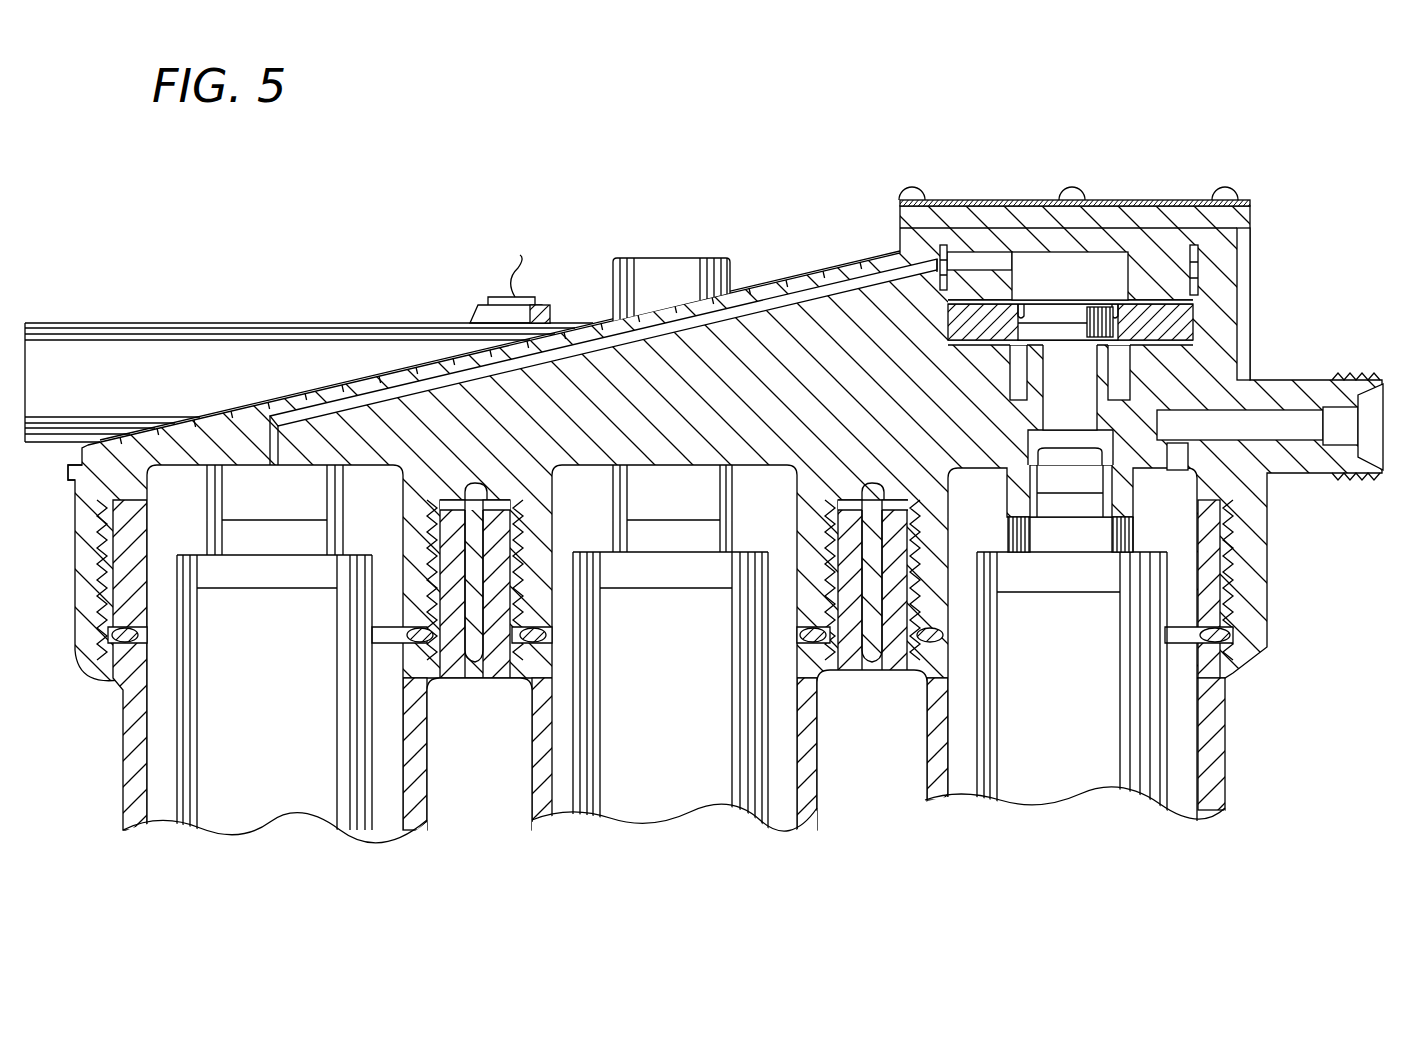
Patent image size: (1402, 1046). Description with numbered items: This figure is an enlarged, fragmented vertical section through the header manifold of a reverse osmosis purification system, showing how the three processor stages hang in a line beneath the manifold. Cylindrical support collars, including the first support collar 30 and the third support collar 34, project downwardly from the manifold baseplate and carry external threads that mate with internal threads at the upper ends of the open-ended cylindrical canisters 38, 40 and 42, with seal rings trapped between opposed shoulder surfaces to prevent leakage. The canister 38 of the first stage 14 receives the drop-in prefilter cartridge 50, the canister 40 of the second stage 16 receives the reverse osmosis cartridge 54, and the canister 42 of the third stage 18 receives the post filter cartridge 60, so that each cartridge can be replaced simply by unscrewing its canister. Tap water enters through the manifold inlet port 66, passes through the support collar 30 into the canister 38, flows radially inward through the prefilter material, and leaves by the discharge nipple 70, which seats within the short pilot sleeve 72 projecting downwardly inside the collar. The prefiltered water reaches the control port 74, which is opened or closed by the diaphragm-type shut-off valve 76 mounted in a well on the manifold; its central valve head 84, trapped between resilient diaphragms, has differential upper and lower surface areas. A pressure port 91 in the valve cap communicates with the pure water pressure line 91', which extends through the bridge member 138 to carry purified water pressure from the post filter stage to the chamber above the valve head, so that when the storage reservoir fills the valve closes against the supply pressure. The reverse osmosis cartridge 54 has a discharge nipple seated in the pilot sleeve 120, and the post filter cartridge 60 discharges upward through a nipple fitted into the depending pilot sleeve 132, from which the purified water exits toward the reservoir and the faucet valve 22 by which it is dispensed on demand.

The first stage 14 is at (1090, 752).
The second stage 16 is at (700, 772).
The third stage 18 is at (290, 783).
The faucet valve 22 is at (420, 603).
The support collar 30 is at (1225, 595).
The support collar 34 is at (105, 603).
The cylindrical canister 38 is at (1215, 762).
The cylindrical canister 40 is at (815, 770).
The cylindrical canister 42 is at (430, 772).
The prefilter cartridge 50 is at (1012, 777).
The reverse osmosis cartridge 54 is at (632, 797).
The post filter cartridge 60 is at (230, 780).
The manifold inlet port 66 is at (1345, 384).
The discharge nipple 70 is at (1068, 470).
The pilot sleeve 72 is at (1133, 498).
The control port 74 is at (1097, 356).
The shut-off valve 76 is at (1225, 181).
The valve head 84 is at (1067, 313).
The pressure port 91 is at (1069, 214).
The pure water pressure line 91' is at (603, 331).
The pilot sleeve 120 is at (680, 507).
The pilot sleeve 132 is at (280, 507).
The bridge member 138 is at (797, 278).